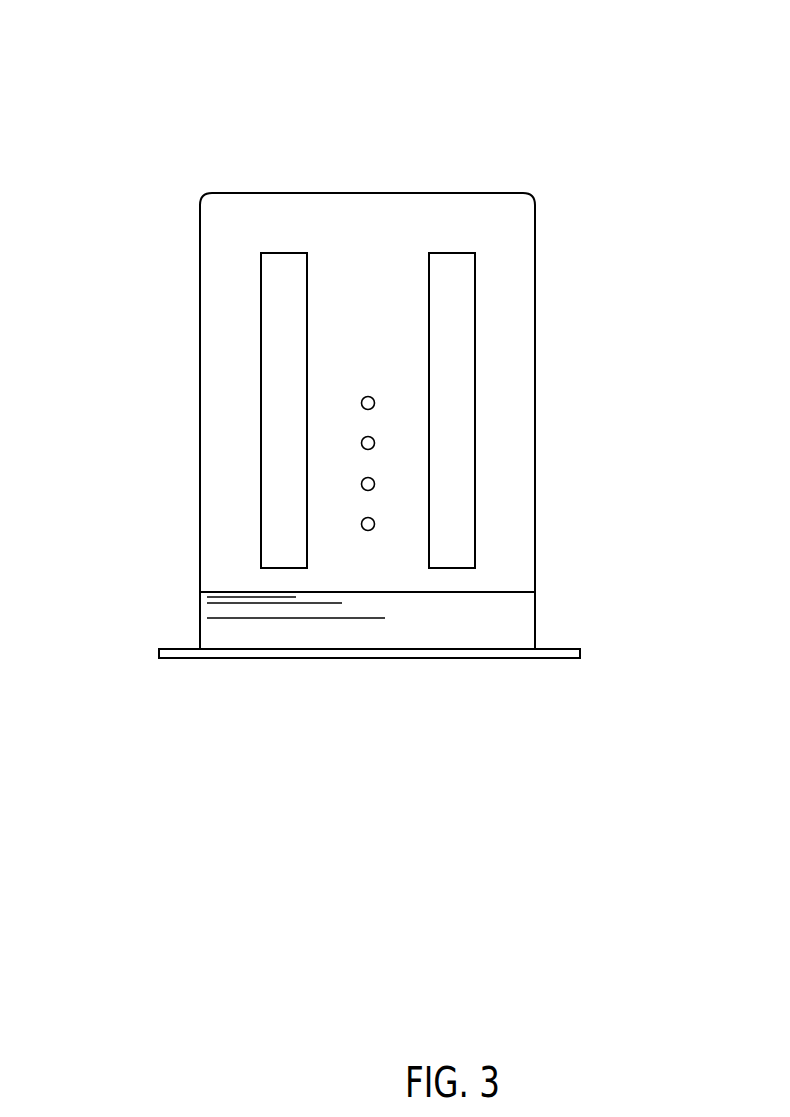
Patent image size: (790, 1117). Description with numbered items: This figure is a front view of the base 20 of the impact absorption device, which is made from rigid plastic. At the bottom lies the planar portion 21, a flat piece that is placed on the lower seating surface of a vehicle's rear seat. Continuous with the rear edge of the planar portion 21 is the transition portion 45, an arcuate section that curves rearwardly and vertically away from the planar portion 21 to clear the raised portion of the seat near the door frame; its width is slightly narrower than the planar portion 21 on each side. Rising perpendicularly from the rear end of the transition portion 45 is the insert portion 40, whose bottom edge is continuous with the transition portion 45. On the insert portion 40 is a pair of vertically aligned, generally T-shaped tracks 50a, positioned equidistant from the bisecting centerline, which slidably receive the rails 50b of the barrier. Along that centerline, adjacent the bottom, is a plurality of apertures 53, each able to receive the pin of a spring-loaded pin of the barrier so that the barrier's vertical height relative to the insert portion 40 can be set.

The base 20 is at (143, 98).
The insert portion 40 is at (217, 231).
The tracks 50a is at (457, 313).
The rails 50b is at (285, 397).
The apertures 53 is at (371, 396).
The transition portion 45 is at (535, 622).
The planar portion 21 is at (580, 658).